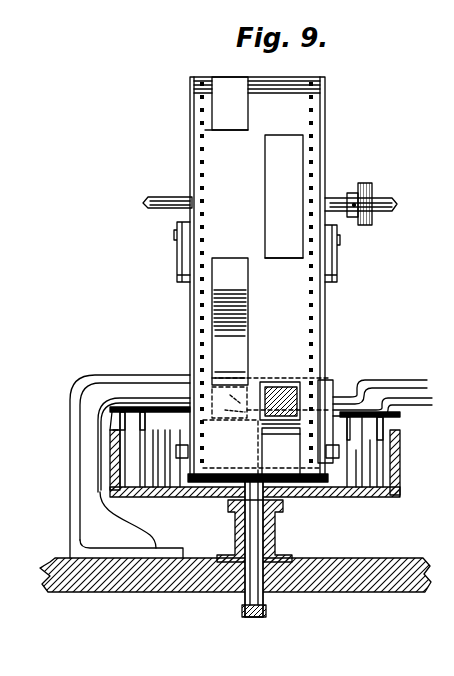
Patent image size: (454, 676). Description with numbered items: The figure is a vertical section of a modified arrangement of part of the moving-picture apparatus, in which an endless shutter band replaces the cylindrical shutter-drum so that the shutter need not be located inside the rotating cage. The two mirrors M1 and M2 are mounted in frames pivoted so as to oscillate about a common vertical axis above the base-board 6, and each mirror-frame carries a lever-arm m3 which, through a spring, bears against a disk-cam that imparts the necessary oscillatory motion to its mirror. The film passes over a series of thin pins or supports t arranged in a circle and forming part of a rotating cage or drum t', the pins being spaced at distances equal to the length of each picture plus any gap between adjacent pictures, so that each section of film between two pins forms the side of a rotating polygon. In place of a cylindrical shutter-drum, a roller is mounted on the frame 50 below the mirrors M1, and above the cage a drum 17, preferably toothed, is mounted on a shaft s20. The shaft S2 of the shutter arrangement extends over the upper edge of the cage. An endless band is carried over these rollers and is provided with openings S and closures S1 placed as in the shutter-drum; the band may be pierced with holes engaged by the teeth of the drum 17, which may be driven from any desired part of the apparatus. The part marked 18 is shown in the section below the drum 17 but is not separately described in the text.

The base-board 6 is at (52, 580).
The frame 50 is at (140, 376).
The cage or drum t' is at (255, 452).
The pins or supports t is at (270, 426).
The lever-arm m3 is at (400, 400).
The mirror M2 is at (200, 380).
The shaft s20 is at (372, 200).
The openings S is at (213, 97).
The closures S1 is at (256, 376).
The shaft of shutter-drum S2 is at (312, 95).
The drum 17 is at (230, 299).
The mirror M1 is at (300, 383).
The lower block 18 is at (281, 451).